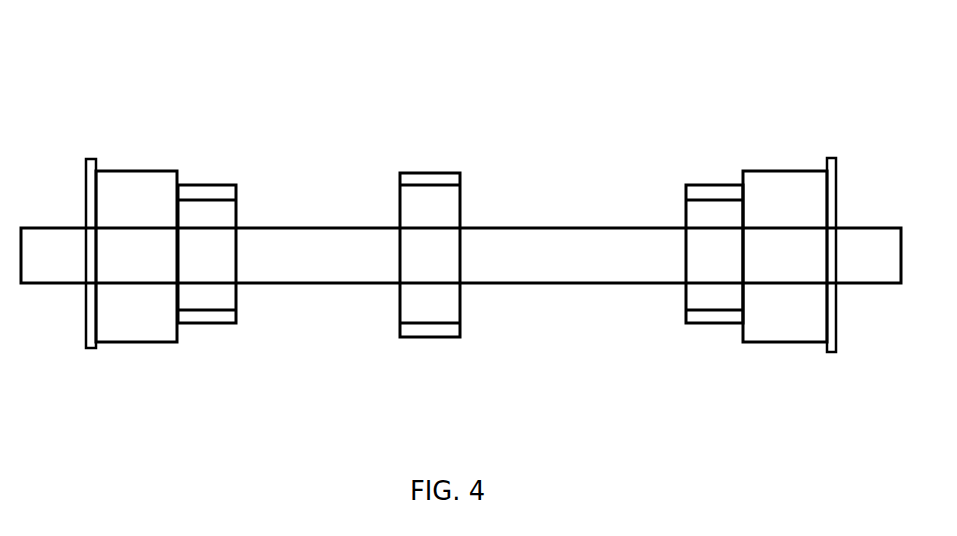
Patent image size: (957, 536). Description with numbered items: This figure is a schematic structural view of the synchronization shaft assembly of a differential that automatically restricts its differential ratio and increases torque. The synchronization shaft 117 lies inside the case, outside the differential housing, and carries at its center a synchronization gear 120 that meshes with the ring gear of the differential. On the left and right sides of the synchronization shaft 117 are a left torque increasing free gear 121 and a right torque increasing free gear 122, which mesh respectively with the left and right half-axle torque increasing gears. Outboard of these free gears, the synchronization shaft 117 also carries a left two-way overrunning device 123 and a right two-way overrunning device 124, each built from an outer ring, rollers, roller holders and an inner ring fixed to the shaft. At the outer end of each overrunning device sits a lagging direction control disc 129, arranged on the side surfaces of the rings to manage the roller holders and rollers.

The synchronization shaft 117 is at (313, 252).
The synchronization gear 120 is at (430, 310).
The left torque increasing free gear 121 is at (207, 305).
The right torque increasing free gear 122 is at (715, 305).
The left two-way overrunning device 123 is at (127, 158).
The right two-way overrunning device 124 is at (732, 158).
The lagging direction control disc 129 is at (95, 348).